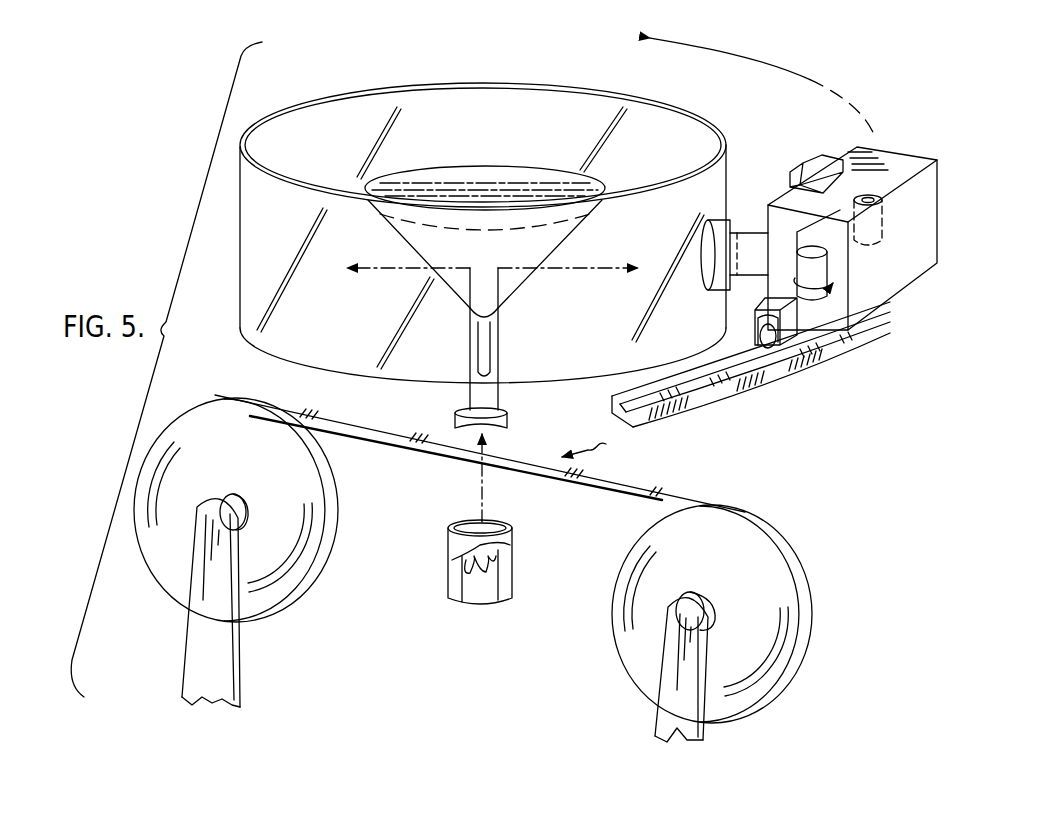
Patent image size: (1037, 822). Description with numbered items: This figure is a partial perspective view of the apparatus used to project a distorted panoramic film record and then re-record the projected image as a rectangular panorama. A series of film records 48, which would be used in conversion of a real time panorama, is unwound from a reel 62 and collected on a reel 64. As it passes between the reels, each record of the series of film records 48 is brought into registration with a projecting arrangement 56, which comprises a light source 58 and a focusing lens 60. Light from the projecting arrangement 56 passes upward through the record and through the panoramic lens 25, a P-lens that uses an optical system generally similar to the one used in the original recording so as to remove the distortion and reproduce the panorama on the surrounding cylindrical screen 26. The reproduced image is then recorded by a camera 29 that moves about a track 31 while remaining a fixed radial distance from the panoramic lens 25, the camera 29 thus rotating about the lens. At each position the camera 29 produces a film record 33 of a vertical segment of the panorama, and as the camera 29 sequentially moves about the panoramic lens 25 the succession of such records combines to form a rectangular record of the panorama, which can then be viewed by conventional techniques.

The panoramic lens 25 is at (484, 188).
The cylindrical screen 26 is at (356, 86).
The camera 29 is at (950, 177).
The track 31 is at (730, 409).
The film record 33 is at (832, 237).
The series of film records 48 is at (420, 460).
The projecting arrangement 56 is at (602, 446).
The light source 58 is at (442, 582).
The focusing lens 60 is at (455, 413).
The reel 62 is at (257, 578).
The reel 64 is at (840, 703).